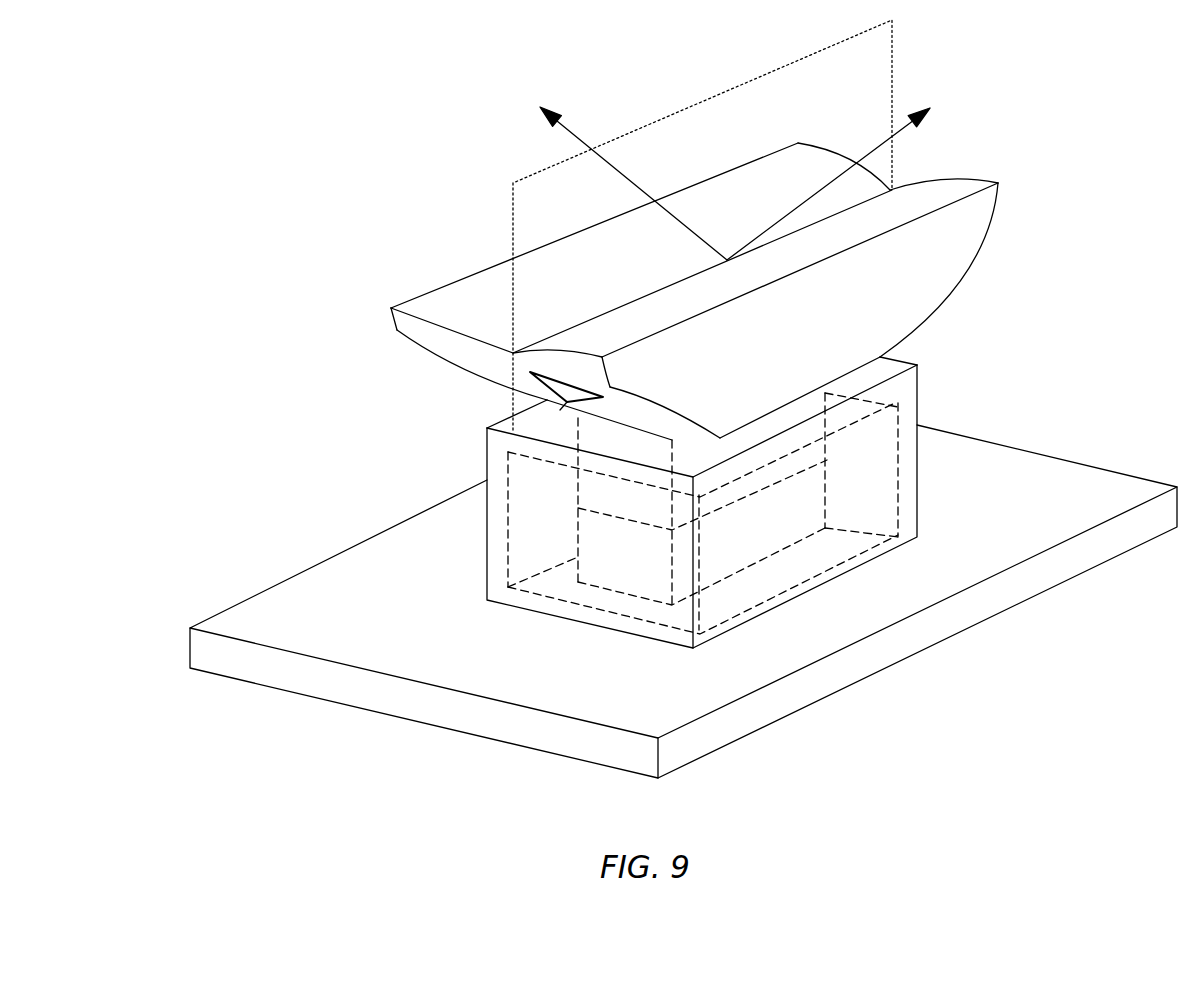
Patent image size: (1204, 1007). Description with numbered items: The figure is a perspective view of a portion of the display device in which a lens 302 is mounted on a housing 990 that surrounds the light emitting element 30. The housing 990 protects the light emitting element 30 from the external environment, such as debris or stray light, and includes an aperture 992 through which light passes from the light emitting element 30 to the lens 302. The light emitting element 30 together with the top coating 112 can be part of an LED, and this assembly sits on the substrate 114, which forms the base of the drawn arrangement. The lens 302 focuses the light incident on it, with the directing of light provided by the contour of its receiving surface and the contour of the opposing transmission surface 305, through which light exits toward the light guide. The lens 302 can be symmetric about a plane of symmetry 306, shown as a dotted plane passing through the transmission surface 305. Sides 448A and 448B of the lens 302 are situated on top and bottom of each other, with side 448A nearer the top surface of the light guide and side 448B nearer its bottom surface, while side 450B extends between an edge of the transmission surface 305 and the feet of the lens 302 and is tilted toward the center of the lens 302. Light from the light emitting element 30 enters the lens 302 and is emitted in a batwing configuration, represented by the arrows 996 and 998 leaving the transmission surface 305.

The lens 302 is at (684, 259).
The transmission surface 305 is at (656, 271).
The plane of symmetry 306 is at (892, 70).
The arrow 998 is at (612, 163).
The arrow 996 is at (892, 137).
The side 450B is at (965, 270).
The side 448A is at (413, 333).
The side 448B is at (612, 381).
The aperture 992 is at (577, 413).
The housing 990 is at (487, 462).
The top coating 112 is at (590, 487).
The light emitting element 30 is at (595, 530).
The substrate 114 is at (237, 672).